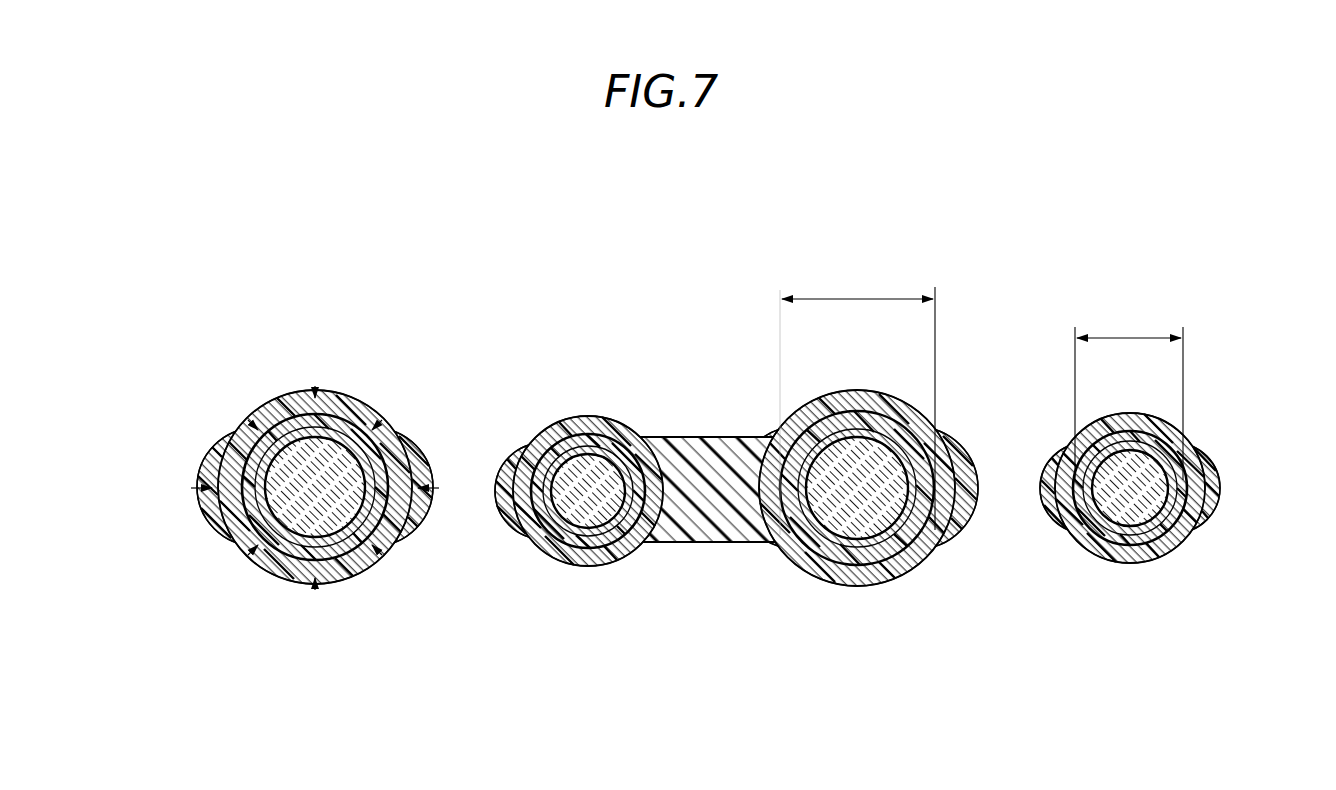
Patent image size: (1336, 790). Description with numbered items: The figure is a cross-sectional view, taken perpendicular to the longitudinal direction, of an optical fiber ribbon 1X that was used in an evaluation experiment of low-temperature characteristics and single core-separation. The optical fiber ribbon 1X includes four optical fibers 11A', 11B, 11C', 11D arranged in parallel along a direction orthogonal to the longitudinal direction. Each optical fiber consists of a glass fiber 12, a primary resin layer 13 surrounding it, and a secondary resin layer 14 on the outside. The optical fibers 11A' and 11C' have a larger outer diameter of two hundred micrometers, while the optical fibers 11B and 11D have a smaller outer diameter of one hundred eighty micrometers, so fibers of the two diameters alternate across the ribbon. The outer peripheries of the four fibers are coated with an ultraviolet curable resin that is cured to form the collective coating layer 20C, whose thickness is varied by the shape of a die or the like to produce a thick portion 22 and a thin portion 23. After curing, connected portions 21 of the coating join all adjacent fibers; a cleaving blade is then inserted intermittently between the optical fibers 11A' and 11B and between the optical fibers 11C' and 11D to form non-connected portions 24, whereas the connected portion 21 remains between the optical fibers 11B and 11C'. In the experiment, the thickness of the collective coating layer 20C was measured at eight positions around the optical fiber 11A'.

The optical fiber ribbon 1X is at (1163, 166).
The optical fiber 11A' is at (316, 470).
The optical fiber 11B is at (624, 436).
The optical fiber 11C' is at (857, 440).
The optical fiber 11D is at (1175, 436).
The glass fiber 12 is at (1110, 504).
The primary resin layer 13 is at (1108, 531).
The secondary resin layer 14 is at (1135, 543).
The collective coating layer 20C is at (572, 560).
The connected portion 21 is at (714, 521).
The thick portion 22 is at (1219, 485).
The thin portion 23 is at (1170, 538).
The non-connected portion 24 is at (446, 535).